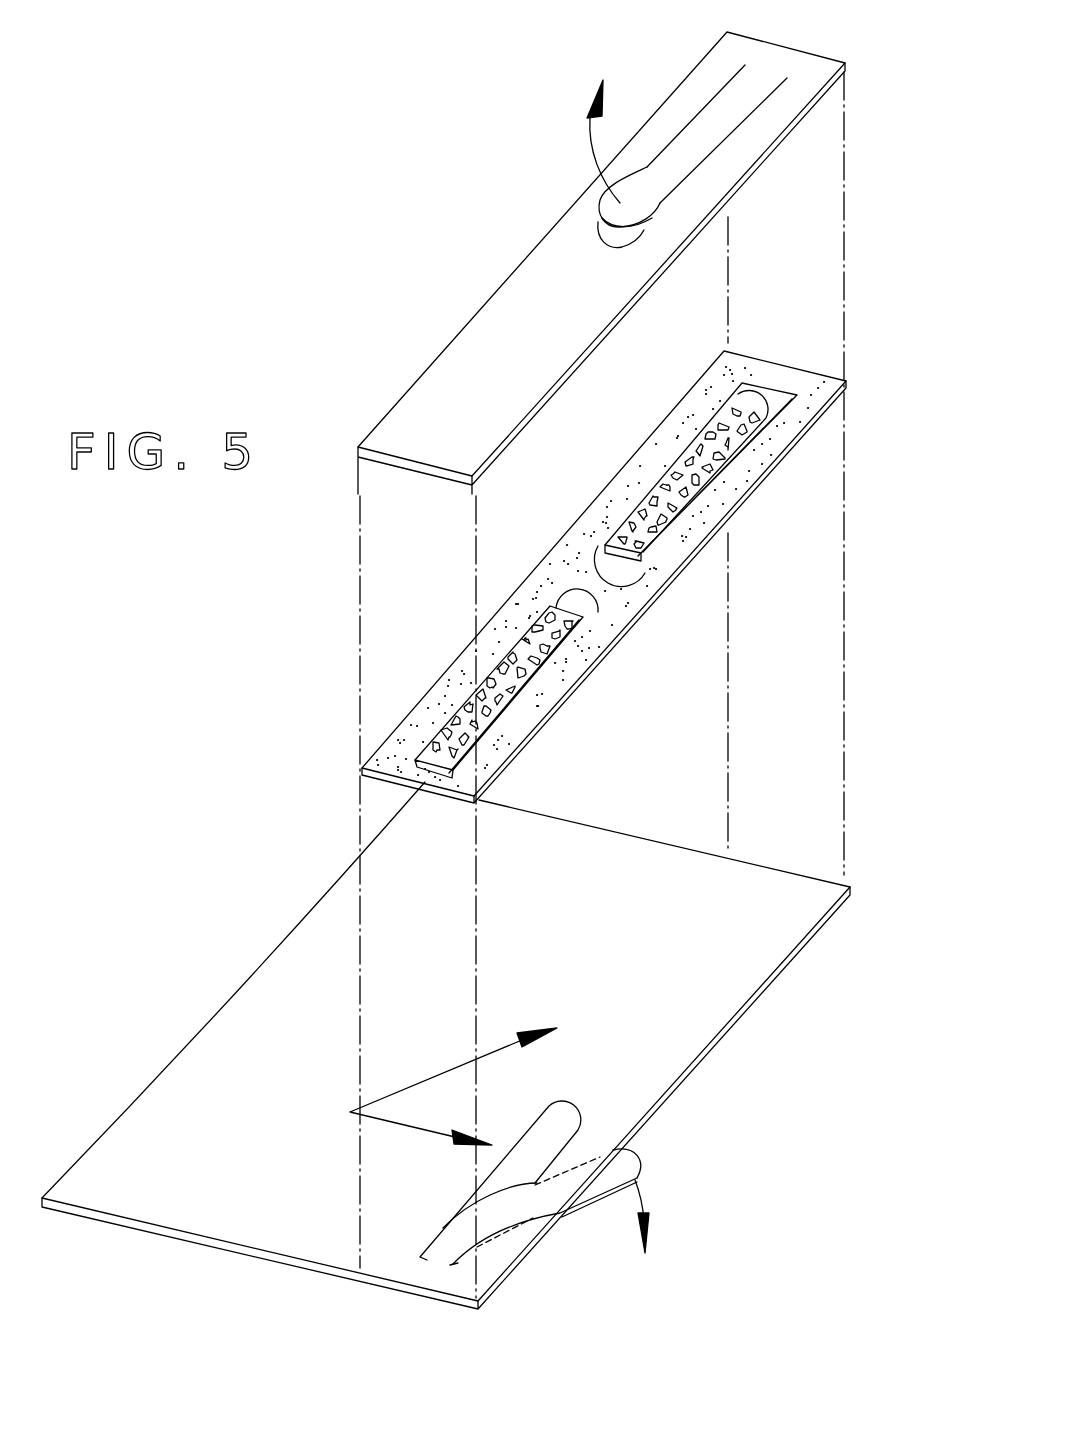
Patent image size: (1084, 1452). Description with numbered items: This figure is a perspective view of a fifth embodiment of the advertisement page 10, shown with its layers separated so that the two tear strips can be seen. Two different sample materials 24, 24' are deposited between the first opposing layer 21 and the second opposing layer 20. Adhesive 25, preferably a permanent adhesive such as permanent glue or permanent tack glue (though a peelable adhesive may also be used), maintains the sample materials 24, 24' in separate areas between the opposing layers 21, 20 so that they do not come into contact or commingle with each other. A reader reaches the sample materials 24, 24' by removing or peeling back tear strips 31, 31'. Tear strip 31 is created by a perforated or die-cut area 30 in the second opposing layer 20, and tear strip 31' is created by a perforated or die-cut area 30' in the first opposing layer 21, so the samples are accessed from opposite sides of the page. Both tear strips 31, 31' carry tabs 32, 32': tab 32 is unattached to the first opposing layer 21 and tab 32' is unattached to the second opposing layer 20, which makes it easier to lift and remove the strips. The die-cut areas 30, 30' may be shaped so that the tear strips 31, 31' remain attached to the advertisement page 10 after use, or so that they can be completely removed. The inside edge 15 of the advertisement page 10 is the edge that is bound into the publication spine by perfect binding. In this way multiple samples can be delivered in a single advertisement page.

The advertisement page 10 is at (292, 702).
The inside edge 15 is at (213, 1020).
The second opposing layer 20 is at (771, 58).
The first opposing layer 21 is at (331, 914).
The sample material 24 is at (695, 485).
The sample material 24' is at (527, 683).
The adhesive 25 is at (730, 490).
The perforated or die-cut area 30 is at (707, 134).
The perforated or die-cut area 30' is at (500, 1212).
The tear strip 31 is at (697, 198).
The tear strip 31' is at (540, 1210).
The tab 32 is at (565, 227).
The tab 32' is at (666, 1201).